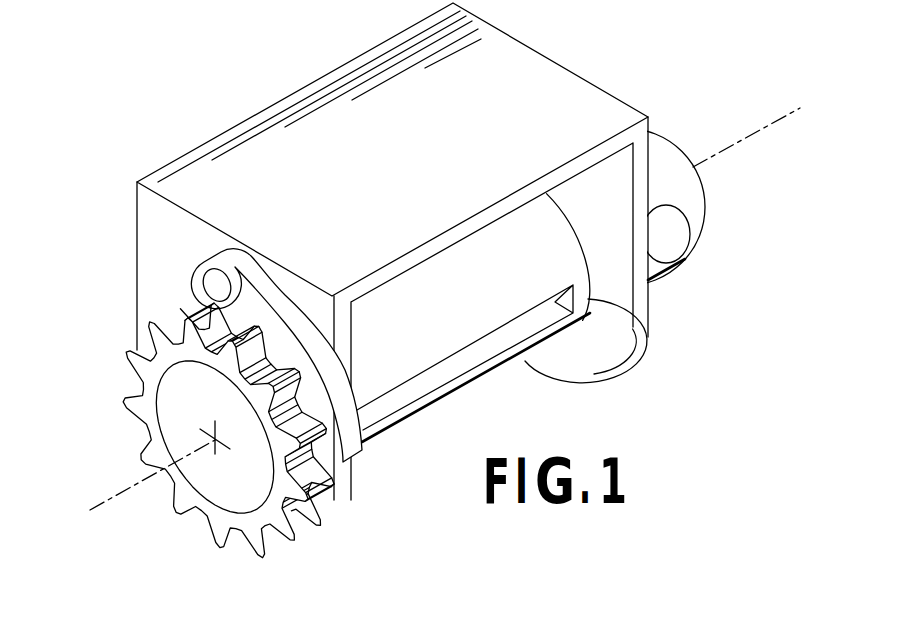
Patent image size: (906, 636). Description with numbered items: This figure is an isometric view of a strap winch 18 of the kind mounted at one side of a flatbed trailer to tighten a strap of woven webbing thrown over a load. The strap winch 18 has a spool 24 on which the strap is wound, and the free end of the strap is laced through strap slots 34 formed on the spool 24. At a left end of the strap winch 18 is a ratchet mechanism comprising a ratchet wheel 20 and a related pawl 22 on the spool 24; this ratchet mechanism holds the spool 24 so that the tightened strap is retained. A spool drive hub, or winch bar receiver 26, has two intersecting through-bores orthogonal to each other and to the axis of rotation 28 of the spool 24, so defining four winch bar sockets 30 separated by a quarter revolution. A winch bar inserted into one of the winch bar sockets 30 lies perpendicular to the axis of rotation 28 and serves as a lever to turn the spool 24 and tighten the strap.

The strap winch 18 is at (258, 79).
The ratchet wheel 20 is at (300, 523).
The pawl 22 is at (258, 386).
The spool 24 is at (640, 323).
The winch bar receiver 26 is at (705, 218).
The axis of rotation 28 is at (107, 497).
The winch bar sockets 30 is at (662, 253).
The strap slots 34 is at (457, 367).